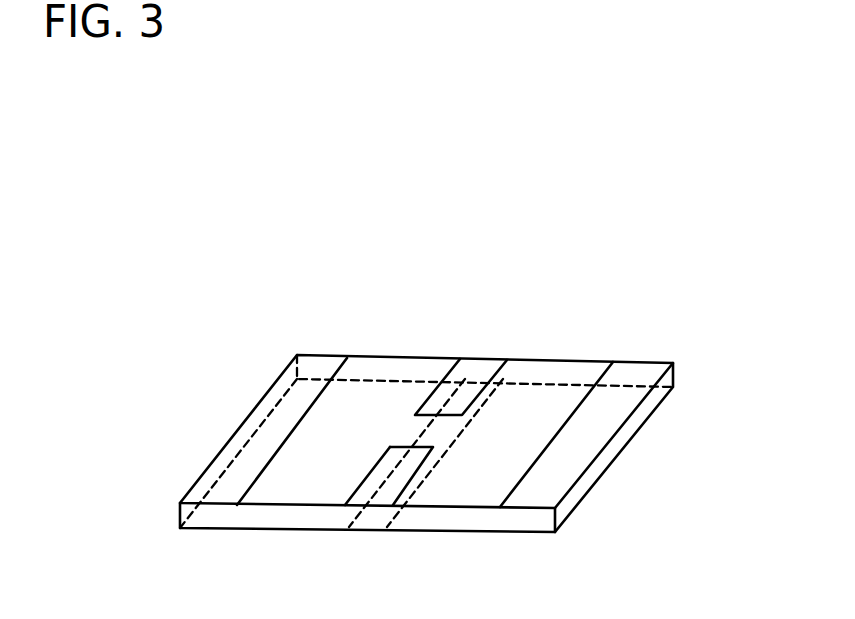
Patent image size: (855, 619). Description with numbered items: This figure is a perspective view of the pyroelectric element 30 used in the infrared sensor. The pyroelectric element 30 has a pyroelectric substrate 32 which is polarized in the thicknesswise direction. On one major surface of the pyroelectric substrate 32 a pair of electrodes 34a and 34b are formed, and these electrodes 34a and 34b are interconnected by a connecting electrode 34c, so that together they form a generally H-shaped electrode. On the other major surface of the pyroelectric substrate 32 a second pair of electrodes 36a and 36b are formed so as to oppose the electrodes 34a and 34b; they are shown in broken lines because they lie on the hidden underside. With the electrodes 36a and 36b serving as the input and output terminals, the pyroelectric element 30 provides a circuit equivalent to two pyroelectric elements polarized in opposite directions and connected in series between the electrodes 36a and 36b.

The pyroelectric element 30 is at (182, 268).
The pyroelectric substrate 32 is at (637, 373).
The electrode 34a is at (368, 370).
The electrode 34b is at (548, 372).
The connecting electrode 34c is at (443, 433).
The electrode 36a is at (312, 488).
The electrode 36b is at (492, 477).